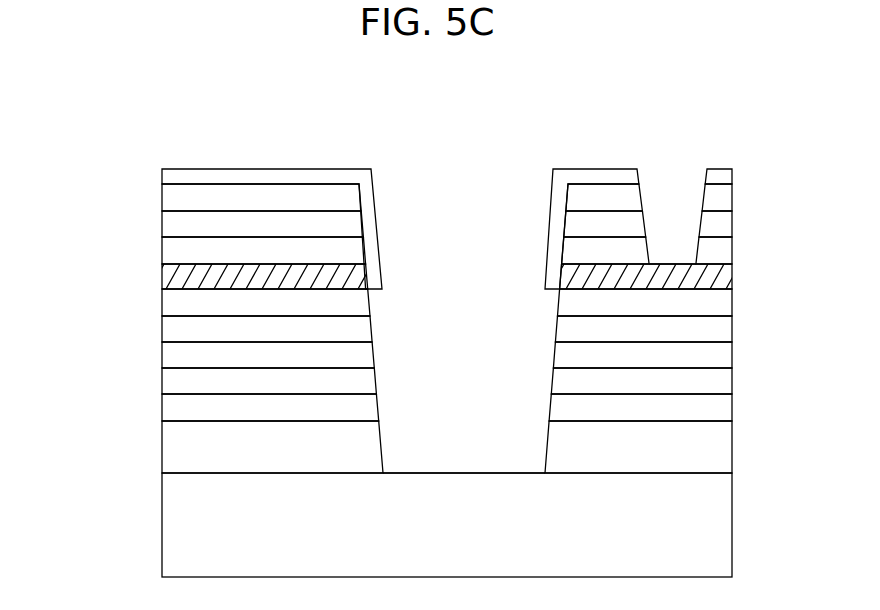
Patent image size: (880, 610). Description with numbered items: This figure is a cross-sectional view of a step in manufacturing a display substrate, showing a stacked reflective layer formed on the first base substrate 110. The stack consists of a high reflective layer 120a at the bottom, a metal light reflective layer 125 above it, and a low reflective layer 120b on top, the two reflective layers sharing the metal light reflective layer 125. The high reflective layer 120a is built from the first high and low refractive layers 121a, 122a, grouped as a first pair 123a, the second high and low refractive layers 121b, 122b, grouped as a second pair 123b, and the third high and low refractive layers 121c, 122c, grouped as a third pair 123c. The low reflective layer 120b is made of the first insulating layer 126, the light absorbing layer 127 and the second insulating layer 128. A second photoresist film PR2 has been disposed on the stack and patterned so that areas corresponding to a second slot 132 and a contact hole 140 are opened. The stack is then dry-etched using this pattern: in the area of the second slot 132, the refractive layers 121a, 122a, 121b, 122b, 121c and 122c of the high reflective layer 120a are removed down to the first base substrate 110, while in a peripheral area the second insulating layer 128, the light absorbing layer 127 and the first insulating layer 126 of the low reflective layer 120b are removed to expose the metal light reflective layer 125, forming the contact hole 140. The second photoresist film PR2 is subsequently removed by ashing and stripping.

The first base substrate 110 is at (162, 534).
The high reflective layer 120a is at (410, 375).
The low reflective layer 120b is at (444, 229).
The first high refractive layer 121a is at (162, 445).
The first low refractive layer 122a is at (162, 407).
The first layer pair 123a is at (381, 433).
The second high refractive layer 121b is at (162, 381).
The second low refractive layer 122b is at (162, 355).
The second layer pair 123b is at (381, 368).
The third high refractive layer 121c is at (162, 330).
The third low refractive layer 122c is at (162, 303).
The third layer pair 123c is at (381, 315).
The metal light reflective layer 125 is at (162, 275).
The first insulating layer 126 is at (162, 249).
The light absorbing layer 127 is at (162, 222).
The second insulating layer 128 is at (162, 196).
The second photoresist film PR2 is at (162, 174).
The second slot 132 is at (471, 378).
The contact hole 140 is at (677, 223).